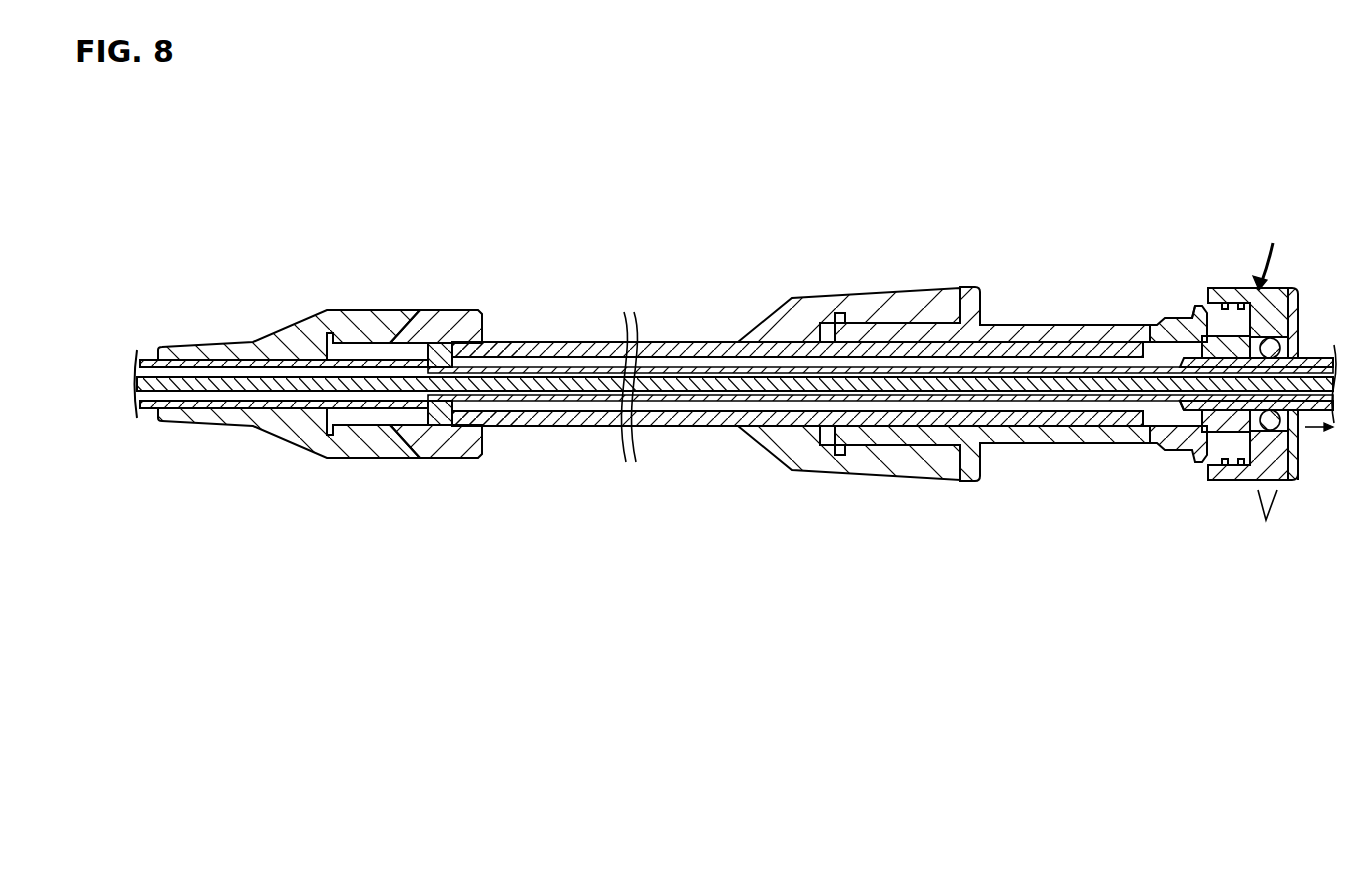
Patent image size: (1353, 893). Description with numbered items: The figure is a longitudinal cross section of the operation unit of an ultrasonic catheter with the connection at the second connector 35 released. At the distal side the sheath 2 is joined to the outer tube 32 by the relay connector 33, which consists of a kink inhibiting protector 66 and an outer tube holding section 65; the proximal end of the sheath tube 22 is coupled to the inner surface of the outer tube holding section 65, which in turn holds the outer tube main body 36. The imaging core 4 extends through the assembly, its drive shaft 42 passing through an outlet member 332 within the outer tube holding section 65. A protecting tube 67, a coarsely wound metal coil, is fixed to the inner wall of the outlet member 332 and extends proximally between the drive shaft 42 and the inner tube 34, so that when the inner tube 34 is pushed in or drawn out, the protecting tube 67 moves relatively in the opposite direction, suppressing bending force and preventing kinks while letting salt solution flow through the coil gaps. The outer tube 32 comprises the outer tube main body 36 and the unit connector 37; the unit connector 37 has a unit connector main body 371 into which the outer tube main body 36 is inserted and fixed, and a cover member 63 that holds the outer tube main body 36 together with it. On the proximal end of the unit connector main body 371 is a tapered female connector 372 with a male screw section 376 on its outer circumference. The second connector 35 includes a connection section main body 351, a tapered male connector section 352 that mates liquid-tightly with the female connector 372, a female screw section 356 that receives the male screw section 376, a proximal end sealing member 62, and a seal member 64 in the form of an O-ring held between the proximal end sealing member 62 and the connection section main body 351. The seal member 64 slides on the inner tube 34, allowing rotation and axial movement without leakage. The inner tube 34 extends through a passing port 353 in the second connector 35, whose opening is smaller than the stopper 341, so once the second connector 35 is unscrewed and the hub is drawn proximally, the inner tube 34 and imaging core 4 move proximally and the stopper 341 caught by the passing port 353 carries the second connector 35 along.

The sheath 2 is at (279, 377).
The sheath tube 22 is at (151, 412).
The imaging core 4 is at (736, 394).
The drive shaft 42 is at (664, 392).
The outer tube 32 is at (830, 305).
The relay connector 33 is at (320, 366).
The kink inhibiting protector 66 is at (312, 312).
The outer tube holding section 65 is at (447, 309).
The outlet member 332 is at (438, 427).
The protecting tube 67 is at (493, 410).
The outer tube main body 36 is at (797, 330).
The unit connector 37 is at (944, 324).
The cover member 63 is at (905, 297).
The unit connector main body 371 is at (888, 208).
The female connector 372 is at (1170, 323).
The male screw section 376 is at (1192, 305).
The second connector 35 is at (1247, 377).
The female screw section 356 is at (1240, 287).
The male connector section 352 is at (1230, 335).
The passing port 353 is at (1232, 433).
The connection section main body 351 is at (1314, 377).
The inner tube 34 is at (1242, 406).
The stopper 341 is at (1193, 411).
The seal member 64 is at (1262, 429).
The proximal end sealing member 62 is at (1297, 472).